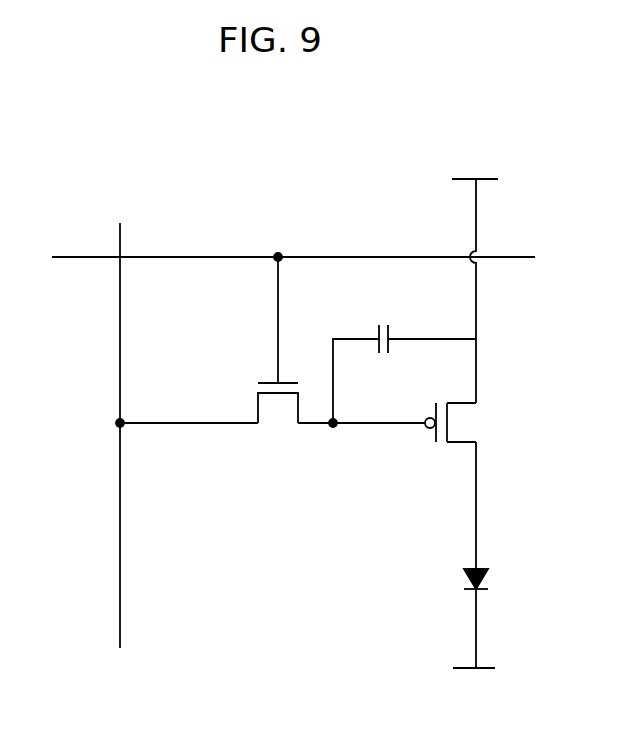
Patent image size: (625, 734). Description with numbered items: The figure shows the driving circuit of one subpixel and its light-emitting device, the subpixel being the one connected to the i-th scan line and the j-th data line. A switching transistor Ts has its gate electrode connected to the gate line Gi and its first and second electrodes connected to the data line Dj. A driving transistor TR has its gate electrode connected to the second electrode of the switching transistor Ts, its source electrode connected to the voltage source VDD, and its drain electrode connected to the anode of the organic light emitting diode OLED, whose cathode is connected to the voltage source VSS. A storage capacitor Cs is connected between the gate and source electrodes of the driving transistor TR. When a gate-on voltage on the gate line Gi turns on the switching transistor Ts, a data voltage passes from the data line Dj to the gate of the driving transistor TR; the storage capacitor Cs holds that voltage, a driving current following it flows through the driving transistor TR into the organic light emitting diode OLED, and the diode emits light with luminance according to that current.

The data line Dj is at (112, 417).
The gate line Gi is at (280, 258).
The voltage source VDD is at (475, 242).
The switching transistor Ts is at (226, 354).
The storage capacitor Cs is at (404, 357).
The driving transistor TR is at (420, 454).
The organic light emitting diode OLED is at (508, 616).
The voltage source VSS is at (473, 686).